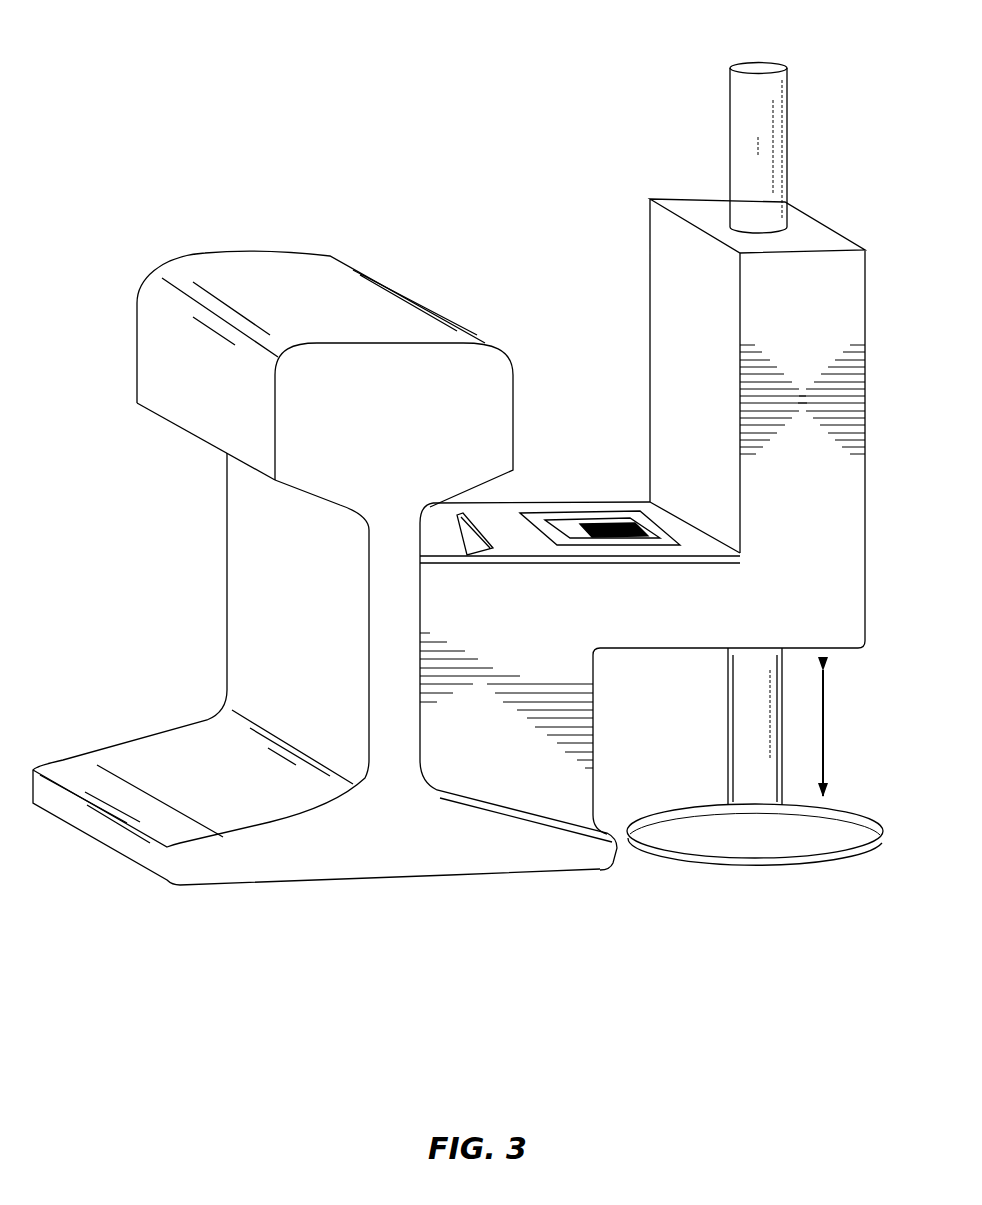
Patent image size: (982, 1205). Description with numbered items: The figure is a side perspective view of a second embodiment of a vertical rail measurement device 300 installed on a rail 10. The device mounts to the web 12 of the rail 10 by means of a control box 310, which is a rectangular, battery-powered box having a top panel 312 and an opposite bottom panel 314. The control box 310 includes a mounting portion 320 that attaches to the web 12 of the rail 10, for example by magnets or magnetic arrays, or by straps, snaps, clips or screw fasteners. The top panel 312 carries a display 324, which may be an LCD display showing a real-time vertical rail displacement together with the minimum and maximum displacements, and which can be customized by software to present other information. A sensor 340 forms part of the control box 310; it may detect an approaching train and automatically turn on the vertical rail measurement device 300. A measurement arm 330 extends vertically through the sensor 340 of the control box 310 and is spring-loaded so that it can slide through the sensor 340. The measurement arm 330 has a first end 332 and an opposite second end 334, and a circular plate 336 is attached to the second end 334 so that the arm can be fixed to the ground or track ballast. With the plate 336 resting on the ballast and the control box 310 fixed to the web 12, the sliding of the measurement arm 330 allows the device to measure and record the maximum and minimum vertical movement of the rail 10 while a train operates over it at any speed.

The rail 10 is at (264, 301).
The web 12 is at (398, 652).
The vertical rail measurement device 300 is at (522, 268).
The control box 310 is at (620, 620).
The top panel 312 is at (633, 494).
The bottom panel 314 is at (618, 660).
The mounting portion 320 is at (481, 735).
The display 324 is at (535, 520).
The measurement arm 330 is at (743, 187).
The first end 332 is at (748, 80).
The second end 334 is at (757, 758).
The plate 336 is at (727, 835).
The sensor 340 is at (705, 350).